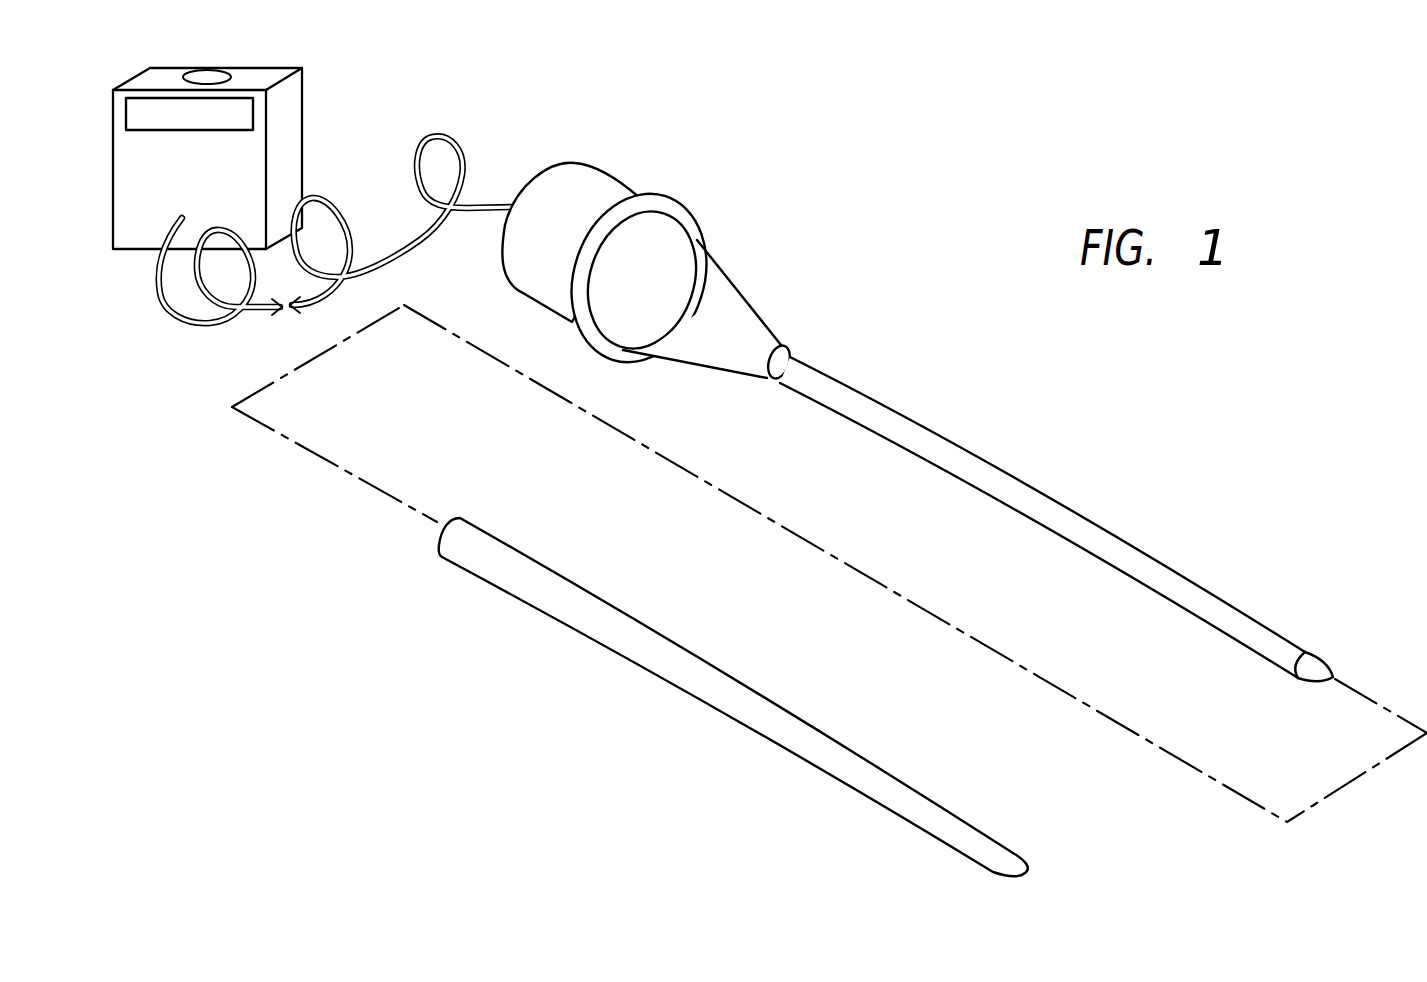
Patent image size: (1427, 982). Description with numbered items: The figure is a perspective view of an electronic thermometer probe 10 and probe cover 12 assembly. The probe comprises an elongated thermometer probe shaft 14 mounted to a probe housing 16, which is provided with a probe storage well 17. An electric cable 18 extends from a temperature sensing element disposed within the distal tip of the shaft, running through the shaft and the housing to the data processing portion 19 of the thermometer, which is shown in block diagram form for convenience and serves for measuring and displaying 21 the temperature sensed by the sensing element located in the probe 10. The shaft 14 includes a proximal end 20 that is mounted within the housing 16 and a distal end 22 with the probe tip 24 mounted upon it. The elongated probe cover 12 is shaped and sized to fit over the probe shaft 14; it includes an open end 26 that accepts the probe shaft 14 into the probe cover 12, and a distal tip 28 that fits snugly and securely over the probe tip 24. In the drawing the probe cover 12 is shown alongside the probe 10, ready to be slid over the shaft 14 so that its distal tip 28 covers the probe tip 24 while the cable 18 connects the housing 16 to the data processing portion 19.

The thermometer probe 10 is at (941, 450).
The probe cover 12 is at (727, 662).
The thermometer probe shaft 14 is at (1163, 578).
The probe housing 16 is at (725, 284).
The probe storage well 17 is at (207, 80).
The electric cable 18 is at (412, 172).
The data processing portion 19 is at (288, 117).
The proximal end 20 is at (818, 349).
The displaying 21 is at (142, 113).
The distal end 22 is at (1313, 682).
The probe tip 24 is at (1330, 678).
The open end 26 is at (447, 521).
The distal tip 28 is at (1028, 868).